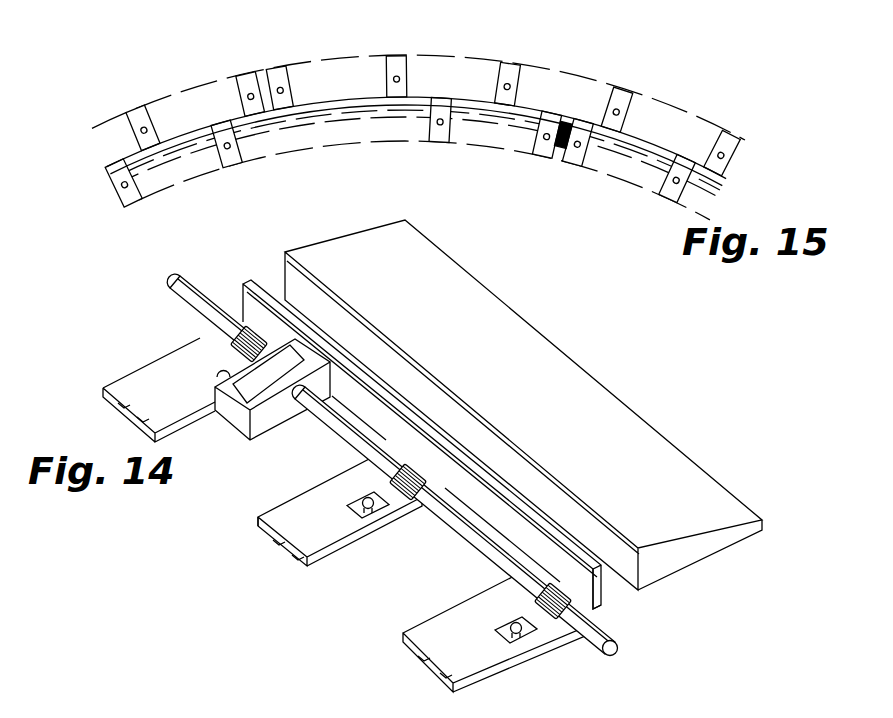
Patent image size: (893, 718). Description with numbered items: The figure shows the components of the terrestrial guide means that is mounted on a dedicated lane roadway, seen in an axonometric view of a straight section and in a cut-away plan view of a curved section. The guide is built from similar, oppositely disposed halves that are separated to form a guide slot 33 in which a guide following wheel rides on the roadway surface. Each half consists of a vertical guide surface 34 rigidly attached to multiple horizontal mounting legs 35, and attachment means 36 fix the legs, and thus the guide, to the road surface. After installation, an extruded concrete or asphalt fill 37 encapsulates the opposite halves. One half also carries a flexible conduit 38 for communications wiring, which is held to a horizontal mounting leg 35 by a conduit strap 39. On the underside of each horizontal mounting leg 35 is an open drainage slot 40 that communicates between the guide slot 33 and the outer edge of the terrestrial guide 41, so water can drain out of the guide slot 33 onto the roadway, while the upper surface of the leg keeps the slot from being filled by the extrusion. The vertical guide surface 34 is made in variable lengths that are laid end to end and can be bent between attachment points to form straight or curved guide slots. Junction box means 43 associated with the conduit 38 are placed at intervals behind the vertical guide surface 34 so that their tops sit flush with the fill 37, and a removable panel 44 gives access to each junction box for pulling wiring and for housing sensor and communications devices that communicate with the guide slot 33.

In FIG. 15, the guide slot 33 is at (367, 98).
In FIG. 14, the guide slot 33 is at (610, 580).
In FIG. 15, the vertical guide surface 34 is at (530, 103).
In FIG. 14, the vertical guide surface 34 is at (294, 283).
In FIG. 15, the horizontal mounting leg 35 is at (620, 97).
In FIG. 14, the horizontal mounting leg 35 is at (325, 520).
In FIG. 15, the attachment means 36 is at (618, 115).
In FIG. 14, the attachment means 36 is at (378, 503).
In FIG. 15, the extruded concrete or asphalt fill 37 is at (427, 58).
In FIG. 14, the extruded concrete or asphalt fill 37 is at (613, 440).
In FIG. 15, the flexible conduit for communications wiring 38 is at (513, 123).
In FIG. 14, the flexible conduit for communications wiring 38 is at (608, 658).
In FIG. 14, the conduit strap 39 is at (387, 492).
In FIG. 14, the drainage slot 40 is at (282, 547).
In FIG. 14, the outer edge of the terrestrial guide 41 is at (256, 531).
In FIG. 15, the junction box means 43 is at (553, 152).
In FIG. 14, the junction box means 43 is at (247, 367).
In FIG. 14, the removable panel 44 is at (260, 385).